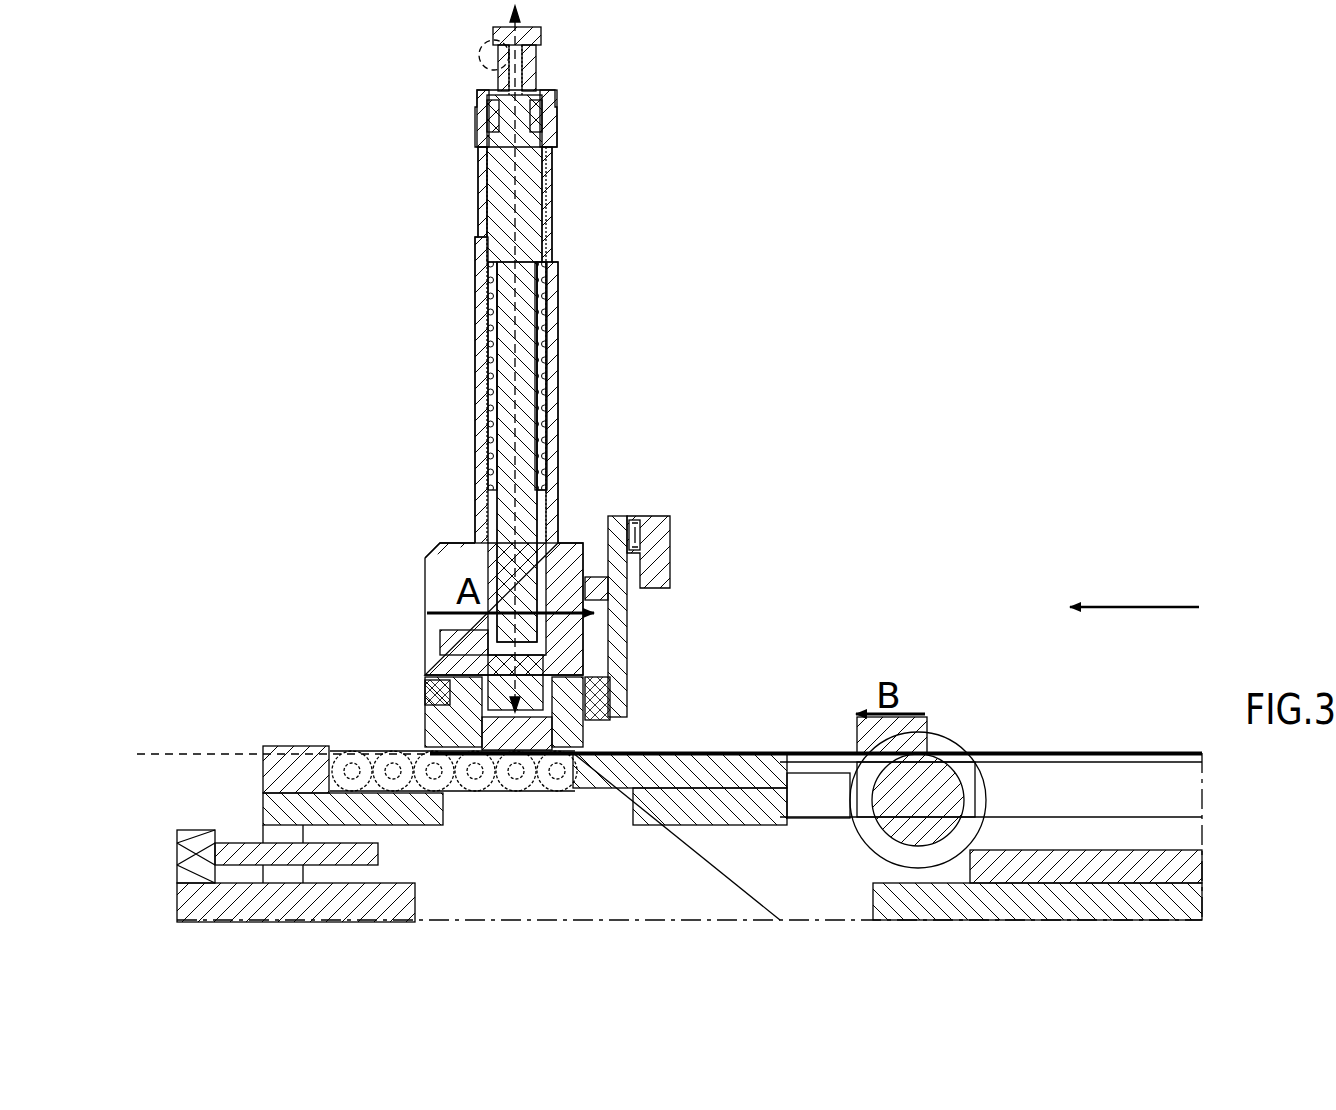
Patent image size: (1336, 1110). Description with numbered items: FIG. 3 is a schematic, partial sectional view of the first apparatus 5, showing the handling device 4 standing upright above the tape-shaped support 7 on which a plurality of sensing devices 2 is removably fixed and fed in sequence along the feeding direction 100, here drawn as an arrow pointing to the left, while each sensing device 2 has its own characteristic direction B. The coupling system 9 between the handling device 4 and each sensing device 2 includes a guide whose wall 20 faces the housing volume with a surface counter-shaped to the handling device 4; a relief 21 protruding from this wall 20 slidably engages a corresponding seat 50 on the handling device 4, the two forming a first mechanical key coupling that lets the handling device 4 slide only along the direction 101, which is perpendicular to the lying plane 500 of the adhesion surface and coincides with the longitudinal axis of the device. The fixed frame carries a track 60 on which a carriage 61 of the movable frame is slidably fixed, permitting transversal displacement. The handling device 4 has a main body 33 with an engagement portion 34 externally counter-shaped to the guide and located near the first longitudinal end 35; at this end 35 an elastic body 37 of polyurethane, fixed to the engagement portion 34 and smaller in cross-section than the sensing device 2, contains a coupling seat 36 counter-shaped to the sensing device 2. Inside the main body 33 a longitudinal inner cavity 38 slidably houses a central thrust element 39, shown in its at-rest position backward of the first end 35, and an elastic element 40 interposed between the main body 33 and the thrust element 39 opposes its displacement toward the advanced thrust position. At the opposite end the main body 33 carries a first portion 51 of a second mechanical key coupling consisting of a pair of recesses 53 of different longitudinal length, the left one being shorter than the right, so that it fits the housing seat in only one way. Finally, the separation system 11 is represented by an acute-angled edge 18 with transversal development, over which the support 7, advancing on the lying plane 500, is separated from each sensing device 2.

The sensing device 2 is at (477, 760).
The handling device 4 is at (478, 368).
The first apparatus 5 is at (1173, 320).
The support 7 is at (1010, 750).
The coupling system 9 is at (712, 559).
The separation system 11 is at (593, 800).
The edge 18 is at (598, 770).
The wall 20 is at (615, 683).
The relief 21 is at (598, 585).
The main body 33 is at (473, 357).
The engagement portion 34 is at (432, 580).
The first longitudinal end 35 is at (438, 628).
The coupling seat 36 is at (480, 740).
The elastic body 37 is at (598, 740).
The inner cavity 38 is at (548, 352).
The central thrust element 39 is at (538, 50).
The elastic element 40 is at (548, 412).
The seat 50 is at (632, 635).
The first portion of second mechanical key coupling 51 is at (433, 192).
The recesses 53 is at (473, 160).
The track 60 is at (721, 494).
The carriage 61 is at (637, 512).
The feeding direction 100 is at (1199, 607).
The direction 101 is at (490, 70).
The lying plane 500 is at (252, 752).